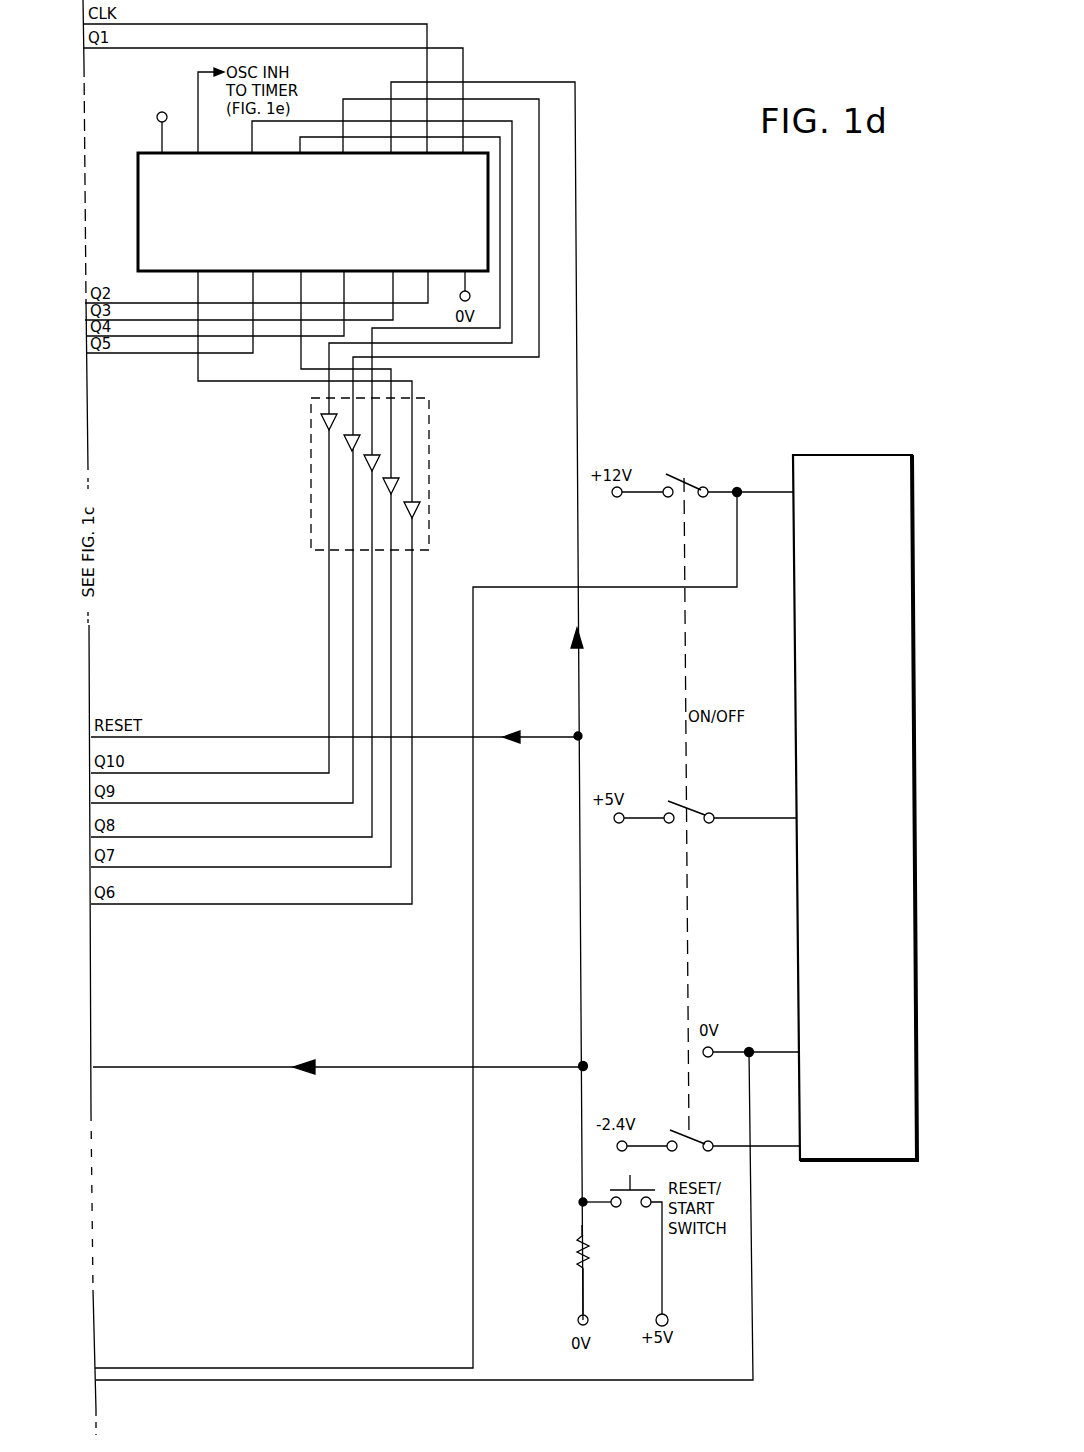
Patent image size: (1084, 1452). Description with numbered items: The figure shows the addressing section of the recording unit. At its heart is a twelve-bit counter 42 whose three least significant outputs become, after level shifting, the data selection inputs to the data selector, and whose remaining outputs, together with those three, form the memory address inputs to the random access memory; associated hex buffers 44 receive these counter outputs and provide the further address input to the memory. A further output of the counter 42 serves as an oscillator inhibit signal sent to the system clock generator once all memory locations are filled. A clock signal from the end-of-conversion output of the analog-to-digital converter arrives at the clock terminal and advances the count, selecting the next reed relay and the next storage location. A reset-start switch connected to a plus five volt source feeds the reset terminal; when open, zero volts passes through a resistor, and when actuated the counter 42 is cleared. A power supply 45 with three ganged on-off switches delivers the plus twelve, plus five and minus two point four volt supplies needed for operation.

The 12-bit counter 42 is at (138, 173).
The hex buffers 44 is at (311, 546).
The power supply 45 is at (830, 455).